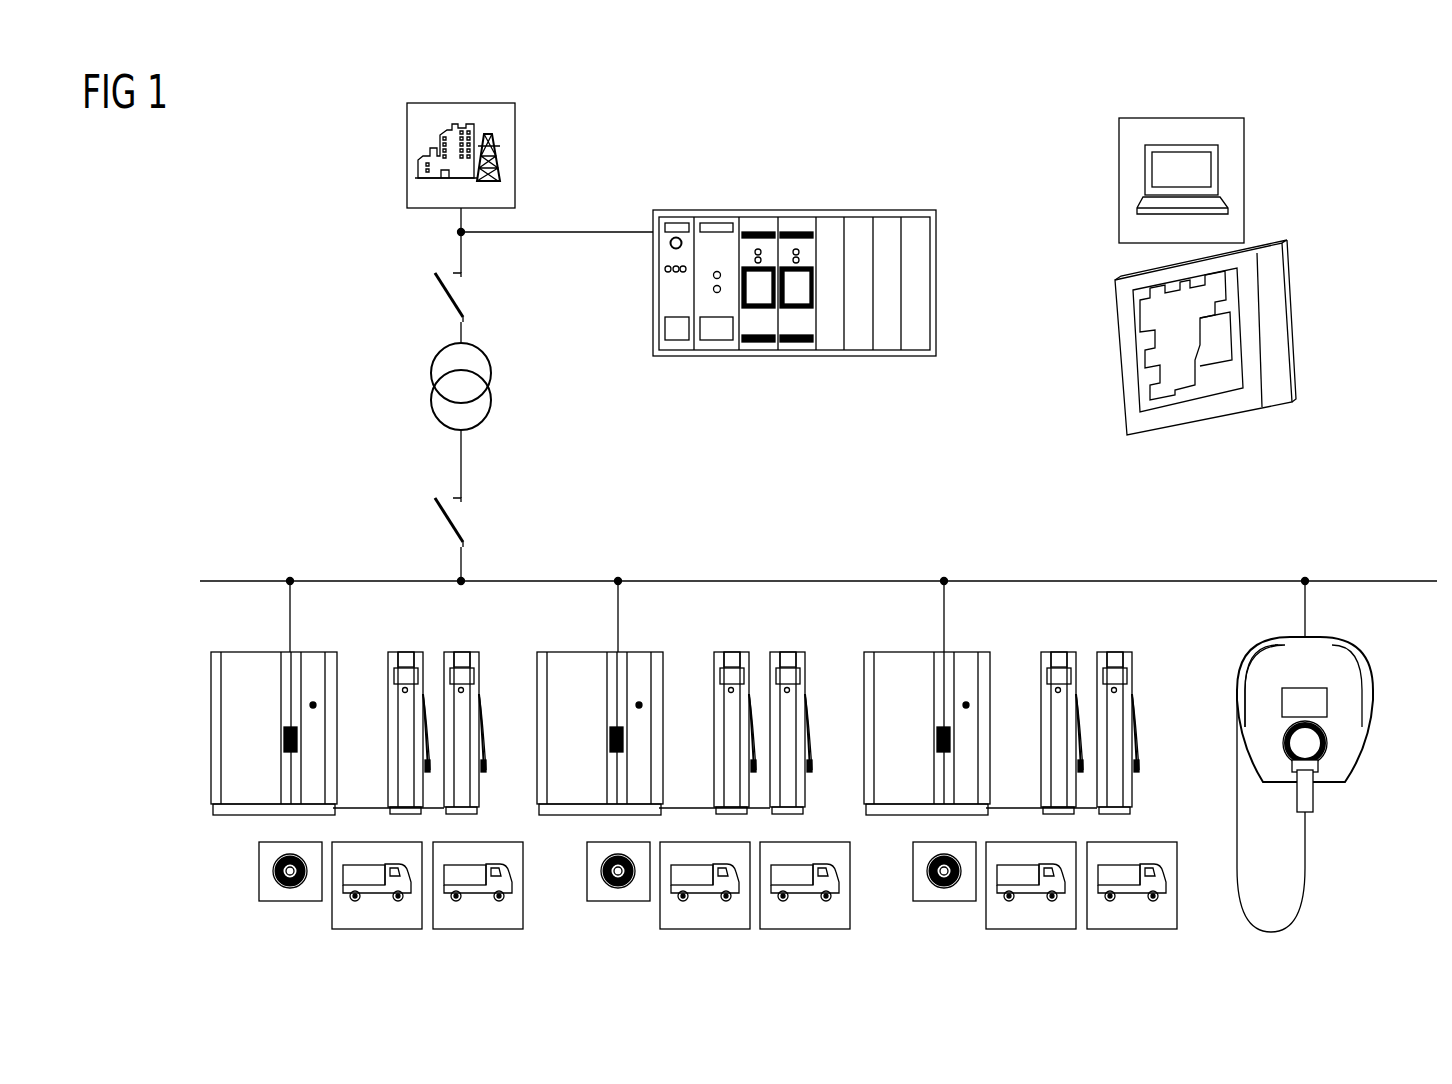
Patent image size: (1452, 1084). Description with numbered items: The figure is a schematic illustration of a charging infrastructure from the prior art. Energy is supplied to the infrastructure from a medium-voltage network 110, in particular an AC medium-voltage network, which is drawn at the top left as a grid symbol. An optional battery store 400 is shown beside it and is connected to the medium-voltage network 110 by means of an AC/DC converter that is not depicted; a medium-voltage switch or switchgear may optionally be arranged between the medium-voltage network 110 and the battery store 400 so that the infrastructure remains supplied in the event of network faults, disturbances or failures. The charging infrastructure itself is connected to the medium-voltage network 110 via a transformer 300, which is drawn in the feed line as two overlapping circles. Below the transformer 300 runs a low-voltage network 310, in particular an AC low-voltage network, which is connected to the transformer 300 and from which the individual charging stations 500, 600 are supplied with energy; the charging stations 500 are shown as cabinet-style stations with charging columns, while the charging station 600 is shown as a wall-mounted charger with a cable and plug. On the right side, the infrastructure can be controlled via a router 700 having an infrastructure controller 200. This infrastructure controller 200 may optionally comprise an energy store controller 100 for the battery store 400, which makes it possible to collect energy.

The energy store controller 100 is at (1070, 180).
The medium-voltage network 110 is at (406, 155).
The infrastructure controller 200 is at (1293, 316).
The transformer 300 is at (491, 383).
The low-voltage network 310 is at (785, 580).
The battery store 400 is at (793, 210).
The charging station 500 is at (203, 732).
The charging station 600 is at (1374, 683).
The router 700 is at (1245, 171).